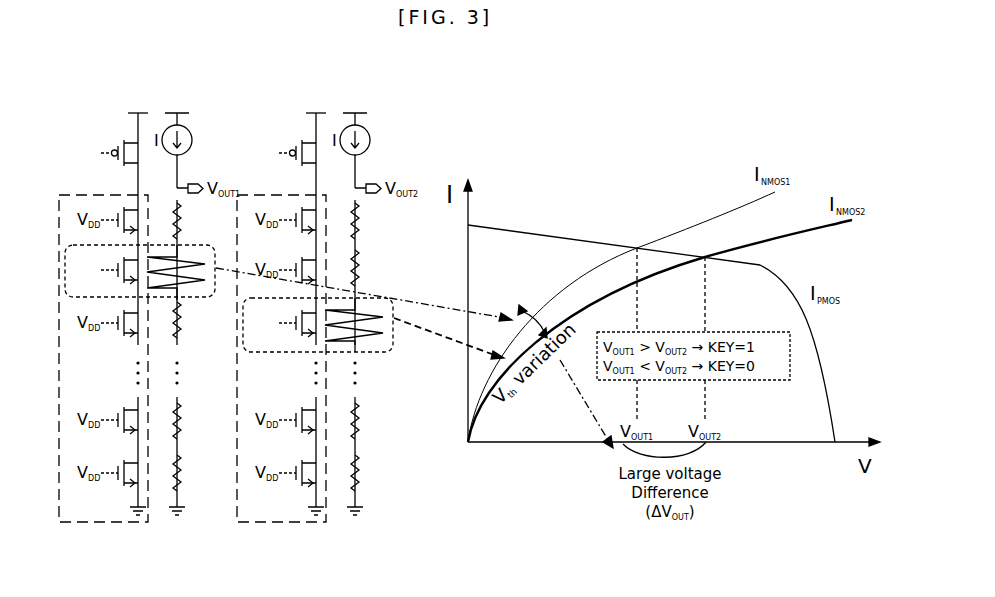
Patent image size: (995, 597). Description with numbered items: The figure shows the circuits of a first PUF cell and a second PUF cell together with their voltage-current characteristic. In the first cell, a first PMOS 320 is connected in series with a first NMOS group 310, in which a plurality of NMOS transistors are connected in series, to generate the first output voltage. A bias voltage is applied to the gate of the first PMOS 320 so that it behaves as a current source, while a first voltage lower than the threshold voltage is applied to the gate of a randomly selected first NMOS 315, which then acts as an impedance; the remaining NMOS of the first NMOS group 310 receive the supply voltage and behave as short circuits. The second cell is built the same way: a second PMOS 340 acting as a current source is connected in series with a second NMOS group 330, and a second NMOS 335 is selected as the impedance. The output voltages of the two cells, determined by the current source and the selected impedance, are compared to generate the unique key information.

The first NMOS group 310 is at (113, 524).
The first NMOS 315 is at (120, 283).
The first PMOS 320 is at (122, 140).
The second NMOS group 330 is at (293, 524).
The second NMOS 335 is at (292, 336).
The second PMOS 340 is at (300, 140).